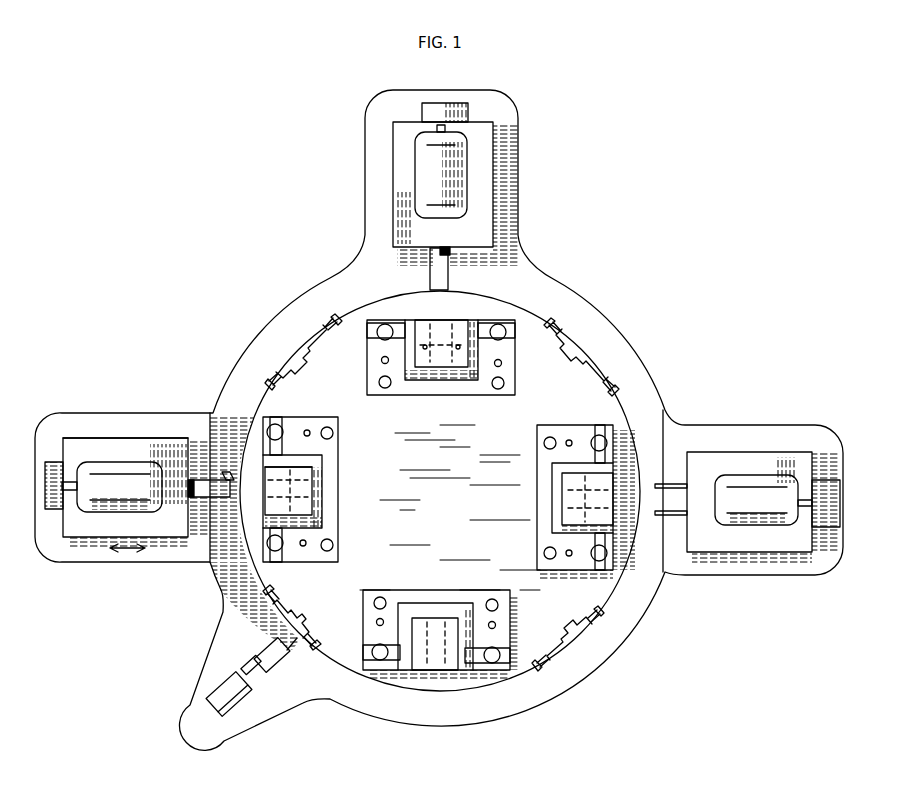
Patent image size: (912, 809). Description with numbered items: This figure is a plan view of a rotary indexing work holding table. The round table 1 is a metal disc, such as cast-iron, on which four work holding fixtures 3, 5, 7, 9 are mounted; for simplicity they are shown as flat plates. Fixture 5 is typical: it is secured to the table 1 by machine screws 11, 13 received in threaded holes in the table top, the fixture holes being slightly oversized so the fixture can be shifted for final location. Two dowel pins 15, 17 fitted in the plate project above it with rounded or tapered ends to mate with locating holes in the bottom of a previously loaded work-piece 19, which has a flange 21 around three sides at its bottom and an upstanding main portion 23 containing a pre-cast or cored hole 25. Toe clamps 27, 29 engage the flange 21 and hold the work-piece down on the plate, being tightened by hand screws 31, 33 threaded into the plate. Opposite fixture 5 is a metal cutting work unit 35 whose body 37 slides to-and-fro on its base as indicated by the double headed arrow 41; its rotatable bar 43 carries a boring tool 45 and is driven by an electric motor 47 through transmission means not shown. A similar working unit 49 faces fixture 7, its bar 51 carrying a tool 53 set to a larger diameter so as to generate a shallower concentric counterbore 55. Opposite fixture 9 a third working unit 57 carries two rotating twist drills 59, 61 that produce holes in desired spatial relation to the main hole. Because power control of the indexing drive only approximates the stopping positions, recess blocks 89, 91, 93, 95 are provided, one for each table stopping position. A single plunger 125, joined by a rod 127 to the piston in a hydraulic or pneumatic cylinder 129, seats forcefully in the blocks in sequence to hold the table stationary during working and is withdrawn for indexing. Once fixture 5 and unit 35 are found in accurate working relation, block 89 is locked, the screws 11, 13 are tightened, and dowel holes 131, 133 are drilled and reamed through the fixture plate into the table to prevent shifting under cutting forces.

The round table 1 is at (444, 521).
The fixture 3 is at (410, 590).
The fixture 5 is at (330, 522).
The fixture 7 is at (458, 385).
The fixture 9 is at (540, 468).
The machine screw 11 is at (332, 548).
The machine screw 13 is at (333, 433).
The dowel pin 15 is at (322, 505).
The dowel pin 17 is at (322, 470).
The work-piece 19 is at (322, 461).
The flange 21 is at (325, 530).
The upstanding main portion 23 is at (250, 505).
The cored hole 25 is at (318, 490).
The toe clamp 27 is at (258, 580).
The toe clamp 29 is at (277, 424).
The hand screw 31 is at (279, 551).
The hand screw 33 is at (282, 430).
The metal cutting work unit 35 is at (109, 447).
The body 37 is at (70, 438).
The double headed arrow 41 is at (127, 550).
The spindle or bar 43 is at (222, 497).
The boring tool 45 is at (226, 472).
The electric motor 47 is at (125, 462).
The working unit 49 is at (488, 170).
The bar 51 is at (452, 256).
The tool 53 is at (461, 276).
The counterbore 55 is at (443, 320).
The third working unit 57 is at (768, 463).
The twist drill 59 is at (660, 484).
The twist drill 61 is at (660, 516).
The recess block 89 is at (300, 648).
The recess block 91 is at (302, 338).
The recess block 93 is at (602, 353).
The recess block 95 is at (592, 640).
The plunger 125 is at (271, 665).
The rod 127 is at (252, 662).
The cylinder 129 is at (218, 692).
The dowel hole 131 is at (305, 547).
The dowel hole 133 is at (309, 430).